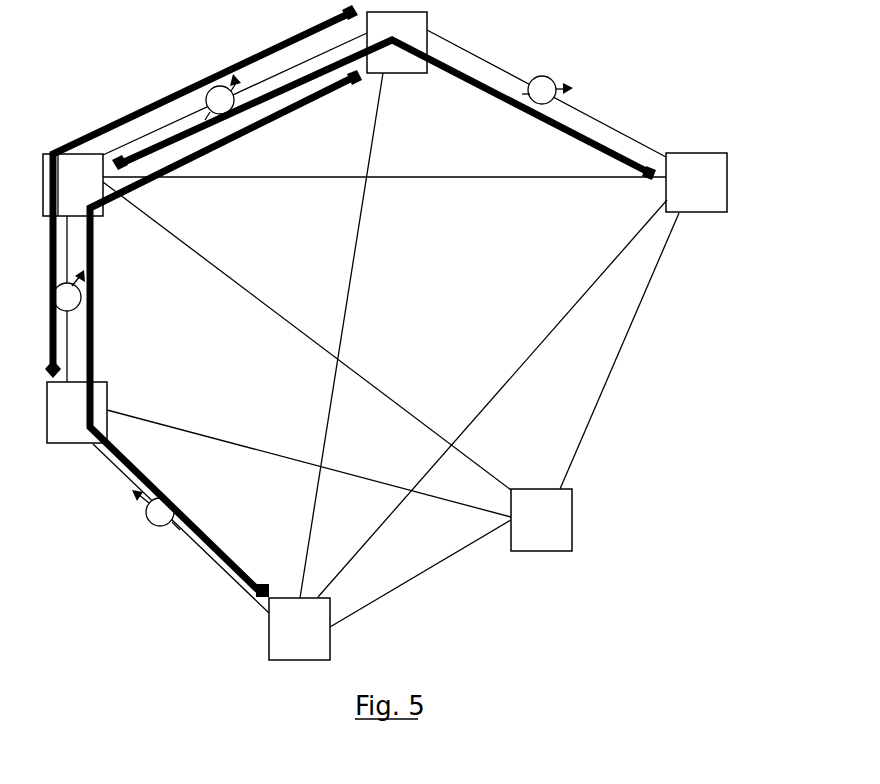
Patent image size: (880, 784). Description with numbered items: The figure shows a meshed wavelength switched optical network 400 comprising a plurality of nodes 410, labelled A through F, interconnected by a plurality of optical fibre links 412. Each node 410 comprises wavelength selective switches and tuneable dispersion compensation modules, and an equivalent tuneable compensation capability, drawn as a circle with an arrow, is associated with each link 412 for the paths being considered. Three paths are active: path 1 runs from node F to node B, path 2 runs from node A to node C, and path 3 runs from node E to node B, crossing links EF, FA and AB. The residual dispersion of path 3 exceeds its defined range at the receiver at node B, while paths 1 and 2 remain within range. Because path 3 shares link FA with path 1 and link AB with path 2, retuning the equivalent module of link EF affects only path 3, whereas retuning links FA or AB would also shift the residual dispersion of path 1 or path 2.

The optical transport network 400 is at (429, 336).
The node 410 is at (715, 190).
The link 412 is at (637, 312).
The path 1 is at (201, 191).
The path 2 is at (384, 110).
The path 3 is at (226, 333).